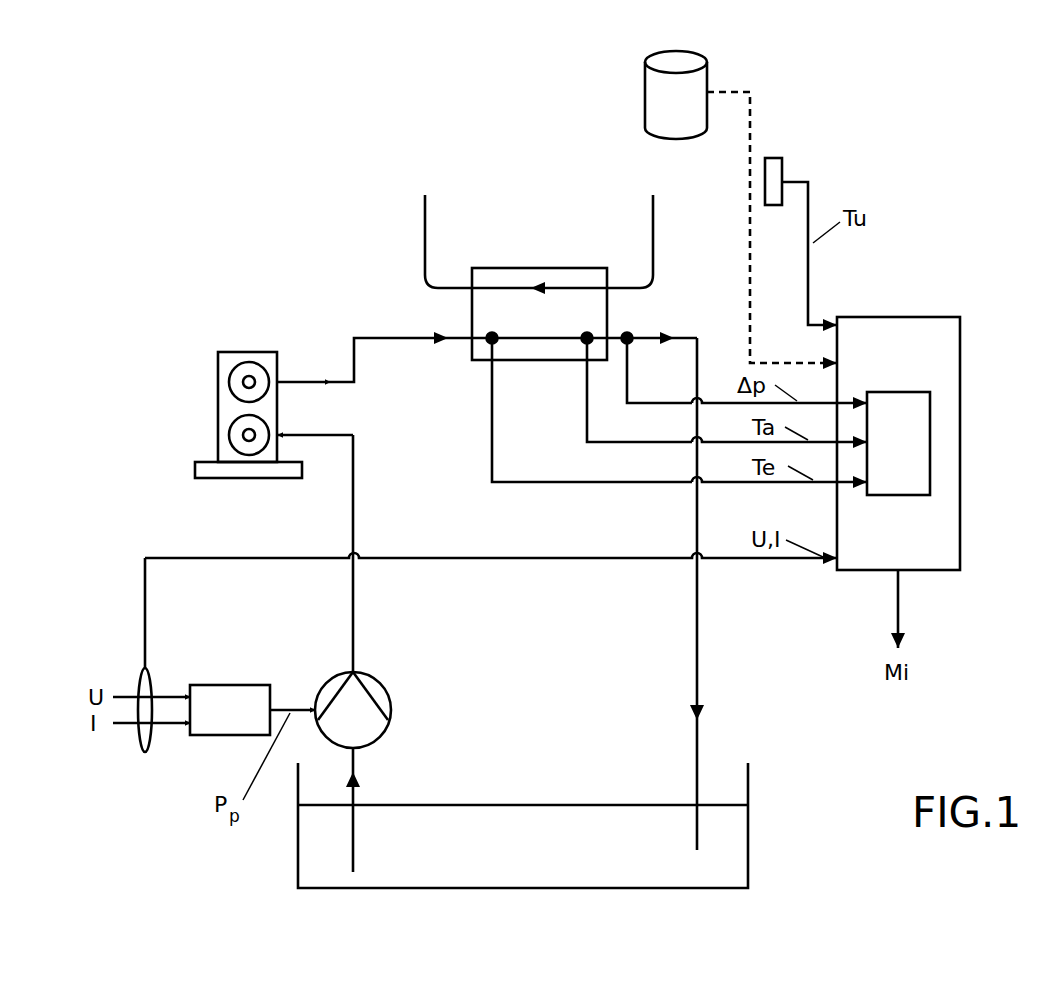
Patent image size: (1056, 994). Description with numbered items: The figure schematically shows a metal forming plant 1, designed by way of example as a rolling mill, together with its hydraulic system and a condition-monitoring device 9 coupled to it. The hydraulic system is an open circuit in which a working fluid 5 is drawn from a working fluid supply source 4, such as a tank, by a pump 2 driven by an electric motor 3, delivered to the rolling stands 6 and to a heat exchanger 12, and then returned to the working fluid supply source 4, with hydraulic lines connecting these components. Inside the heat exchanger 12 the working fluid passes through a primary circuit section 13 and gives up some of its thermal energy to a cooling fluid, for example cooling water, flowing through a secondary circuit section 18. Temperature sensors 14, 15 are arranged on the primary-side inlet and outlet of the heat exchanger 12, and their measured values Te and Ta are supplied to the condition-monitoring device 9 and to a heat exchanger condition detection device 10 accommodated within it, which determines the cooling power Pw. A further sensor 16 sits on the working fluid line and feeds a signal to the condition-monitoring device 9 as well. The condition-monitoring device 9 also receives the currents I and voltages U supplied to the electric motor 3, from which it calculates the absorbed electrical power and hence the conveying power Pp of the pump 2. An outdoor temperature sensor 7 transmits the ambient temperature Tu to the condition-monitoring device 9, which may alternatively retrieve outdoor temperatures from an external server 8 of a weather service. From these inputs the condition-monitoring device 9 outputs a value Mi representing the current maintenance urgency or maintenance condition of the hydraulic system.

The metal forming plant 1 is at (205, 270).
The pump 2 is at (356, 705).
The electric motor 3 is at (242, 707).
The working fluid supply source 4 is at (750, 820).
The working fluid 5 is at (310, 858).
The rolling stands 6 is at (232, 402).
The outdoor temperature sensor 7 is at (773, 165).
The external server 8 is at (658, 110).
The condition-monitoring device 9 is at (960, 317).
The heat exchanger condition detection device 10 is at (930, 415).
The heat exchanger 12 is at (537, 266).
The primary circuit section 13 is at (555, 335).
The temperature sensor 14 is at (488, 345).
The temperature sensor 15 is at (583, 345).
The differential pressure sensor 16 is at (632, 333).
The secondary circuit section 18 is at (500, 285).